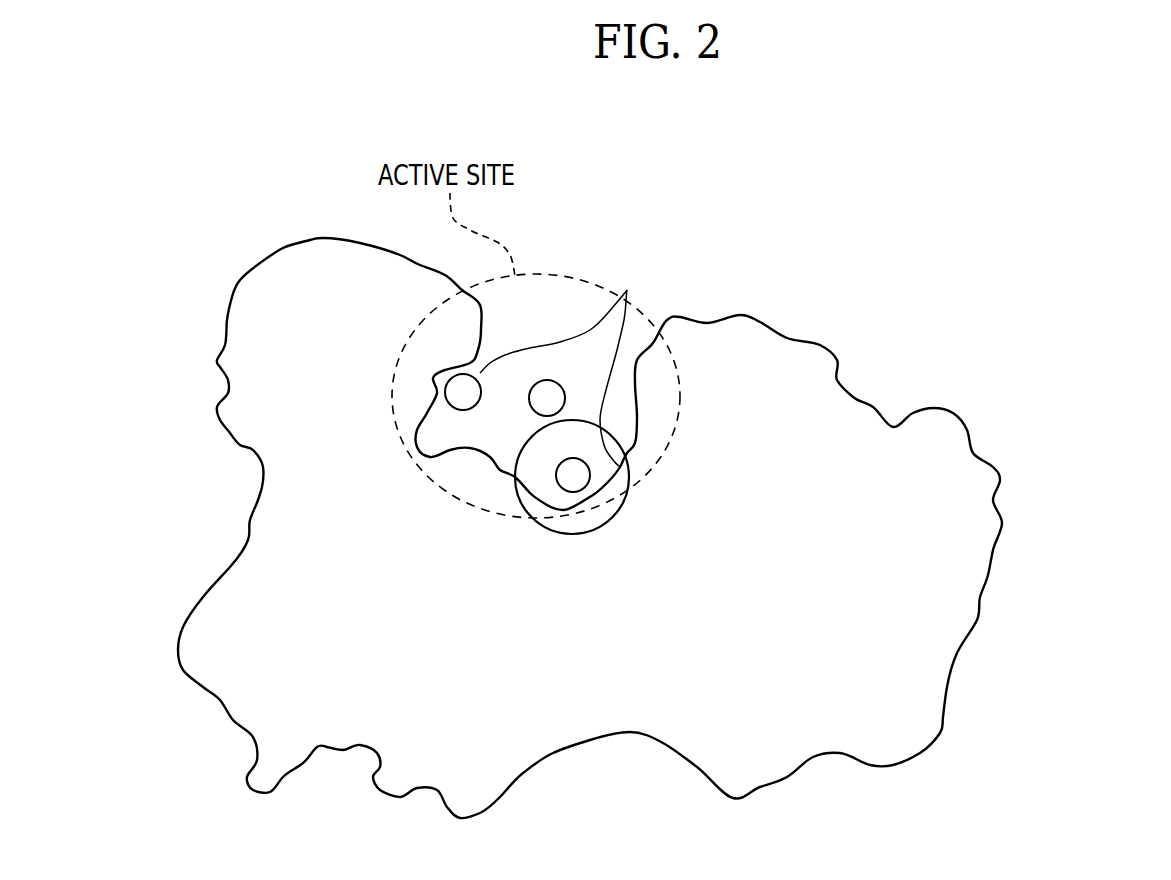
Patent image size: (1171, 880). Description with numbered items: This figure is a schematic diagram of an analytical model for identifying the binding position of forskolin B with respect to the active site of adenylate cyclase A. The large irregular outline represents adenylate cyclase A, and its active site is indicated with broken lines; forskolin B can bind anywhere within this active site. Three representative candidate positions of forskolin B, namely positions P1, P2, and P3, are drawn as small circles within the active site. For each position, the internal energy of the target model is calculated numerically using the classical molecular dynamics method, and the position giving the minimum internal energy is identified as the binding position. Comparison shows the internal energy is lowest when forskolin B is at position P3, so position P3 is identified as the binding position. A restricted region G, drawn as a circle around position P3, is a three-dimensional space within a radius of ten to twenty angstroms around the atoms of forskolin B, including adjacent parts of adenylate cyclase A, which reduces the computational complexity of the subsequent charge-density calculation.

The adenylate cyclase A is at (795, 373).
The forskolin B is at (577, 462).
The restricted region G is at (590, 533).
The position P1 is at (533, 409).
The position P2 is at (458, 410).
The position P3 is at (555, 472).